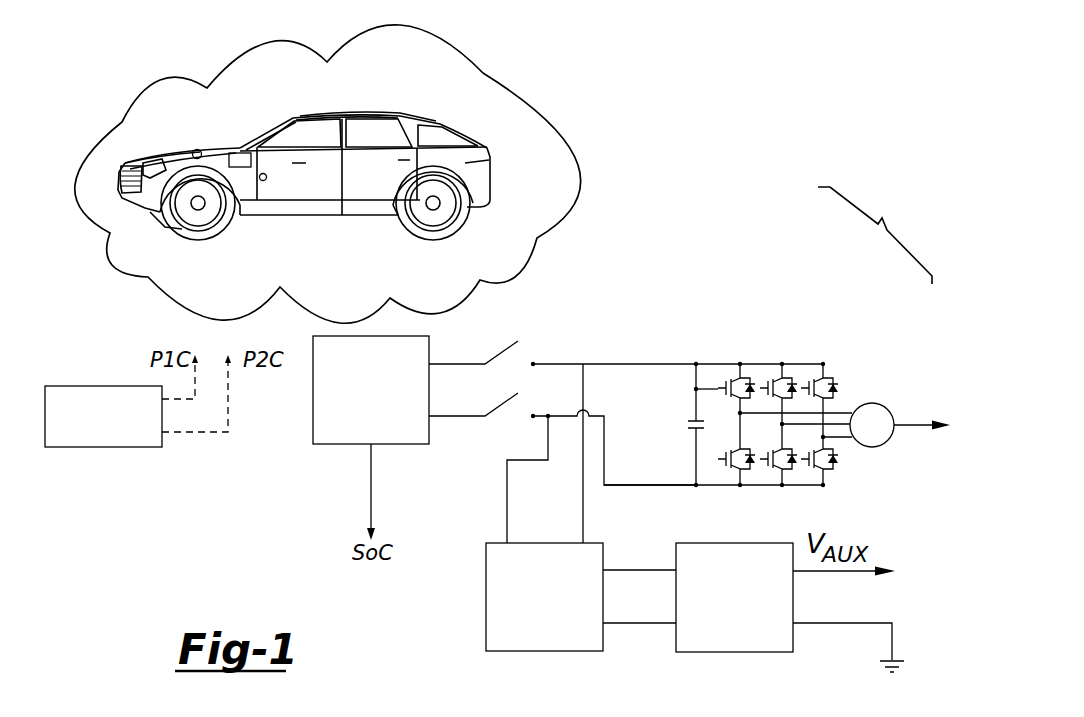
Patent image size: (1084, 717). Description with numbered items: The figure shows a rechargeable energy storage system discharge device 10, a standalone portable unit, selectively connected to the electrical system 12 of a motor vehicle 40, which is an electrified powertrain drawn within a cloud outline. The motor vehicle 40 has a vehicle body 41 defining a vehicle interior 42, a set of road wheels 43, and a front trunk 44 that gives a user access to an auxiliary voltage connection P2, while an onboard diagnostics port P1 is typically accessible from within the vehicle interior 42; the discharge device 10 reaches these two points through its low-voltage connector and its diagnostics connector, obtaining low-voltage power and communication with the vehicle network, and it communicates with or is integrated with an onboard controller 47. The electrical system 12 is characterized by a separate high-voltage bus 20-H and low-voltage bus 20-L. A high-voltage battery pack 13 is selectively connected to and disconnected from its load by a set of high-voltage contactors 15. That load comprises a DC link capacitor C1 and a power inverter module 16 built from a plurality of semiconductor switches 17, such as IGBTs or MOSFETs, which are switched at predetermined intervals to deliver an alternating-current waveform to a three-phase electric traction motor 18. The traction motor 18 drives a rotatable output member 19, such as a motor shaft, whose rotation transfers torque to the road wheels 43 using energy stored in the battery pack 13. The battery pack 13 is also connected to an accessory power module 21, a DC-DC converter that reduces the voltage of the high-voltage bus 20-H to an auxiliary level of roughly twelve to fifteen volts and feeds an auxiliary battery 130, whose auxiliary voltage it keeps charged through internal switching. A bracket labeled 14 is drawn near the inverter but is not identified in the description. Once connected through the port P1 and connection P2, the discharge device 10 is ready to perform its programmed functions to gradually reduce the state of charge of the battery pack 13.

The rechargeable energy storage system discharge device 10 is at (103, 386).
The electrical system 12 is at (772, 294).
The high-voltage battery pack 13 is at (313, 424).
The electric propulsion system 14 is at (875, 235).
The high-voltage contactors 15 is at (573, 292).
The power inverter module 16 is at (668, 363).
The semiconductor switches 17 is at (856, 365).
The electric traction motor 18 is at (877, 402).
The rotatable output member 19 is at (910, 422).
The high-voltage bus 20-H is at (582, 320).
The low-voltage bus 20-L is at (648, 533).
The accessory power module 21 is at (486, 600).
The auxiliary battery 130 is at (793, 600).
The motor vehicle 40 is at (538, 55).
The vehicle body 41 is at (384, 191).
The vehicle interior 42 is at (318, 130).
The road wheels 43 is at (191, 242).
The front trunk 44 is at (137, 153).
The onboard controller 47 is at (239, 152).
The onboard diagnostics port P1 is at (266, 181).
The auxiliary voltage connection P2 is at (196, 149).
The DC link capacitor C1 is at (678, 424).